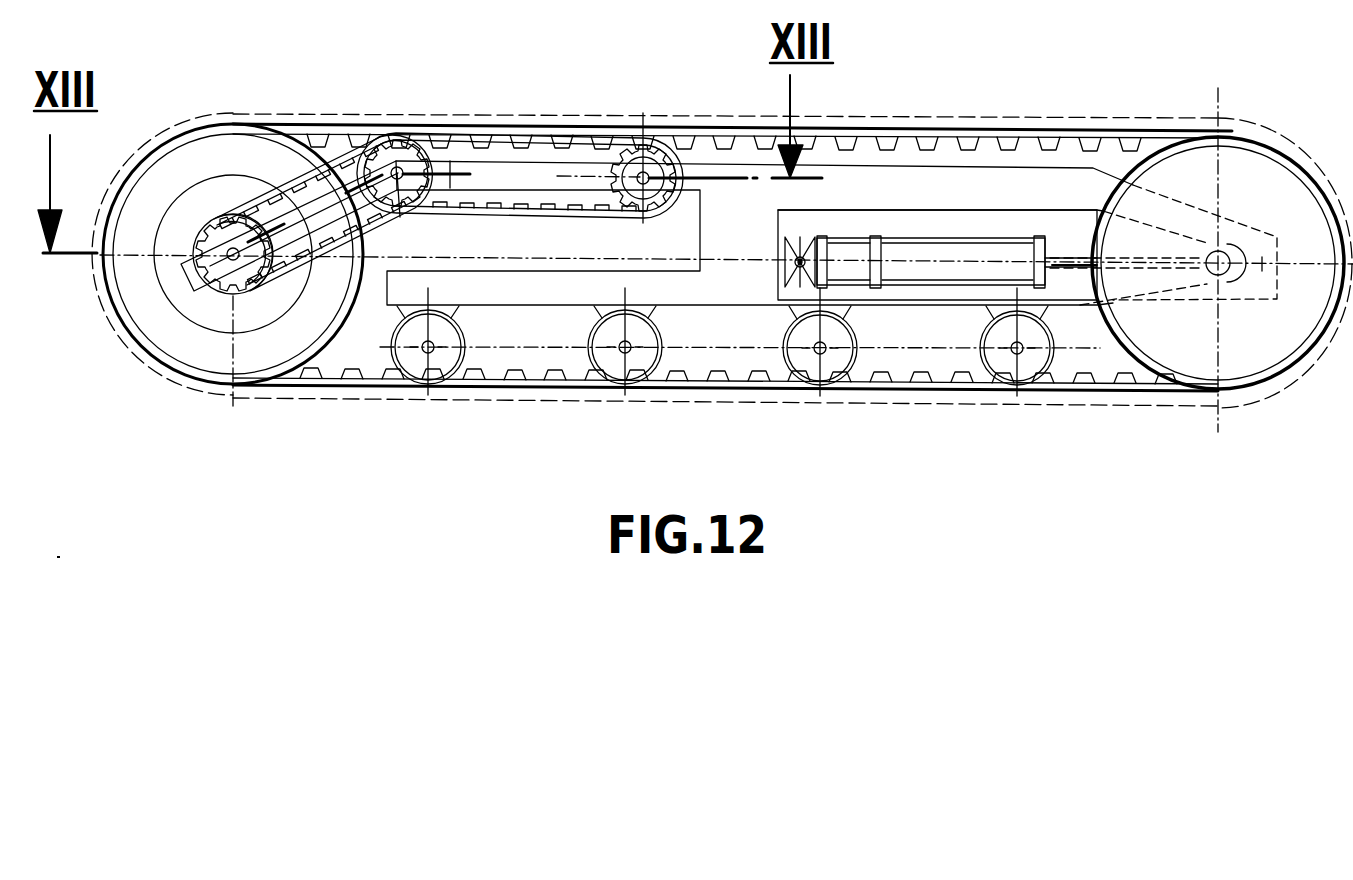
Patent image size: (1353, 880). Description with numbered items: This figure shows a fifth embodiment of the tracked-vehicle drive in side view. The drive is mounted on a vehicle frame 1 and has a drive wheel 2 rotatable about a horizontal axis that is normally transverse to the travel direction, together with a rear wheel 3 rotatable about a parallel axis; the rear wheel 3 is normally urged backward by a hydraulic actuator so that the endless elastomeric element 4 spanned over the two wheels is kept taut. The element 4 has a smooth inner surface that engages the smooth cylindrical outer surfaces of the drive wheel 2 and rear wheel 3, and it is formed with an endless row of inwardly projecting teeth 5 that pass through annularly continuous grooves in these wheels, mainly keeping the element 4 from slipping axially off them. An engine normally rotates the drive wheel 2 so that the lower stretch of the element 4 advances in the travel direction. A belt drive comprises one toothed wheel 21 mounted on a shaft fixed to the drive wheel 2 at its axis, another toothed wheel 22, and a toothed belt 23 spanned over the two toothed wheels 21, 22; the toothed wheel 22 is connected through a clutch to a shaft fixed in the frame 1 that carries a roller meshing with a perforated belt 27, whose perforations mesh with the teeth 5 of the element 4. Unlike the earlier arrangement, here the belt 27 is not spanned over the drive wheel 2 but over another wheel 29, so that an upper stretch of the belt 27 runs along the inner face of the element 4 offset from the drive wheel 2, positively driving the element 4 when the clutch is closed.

The vehicle frame 1 is at (905, 188).
The drive wheel 2 is at (147, 200).
The rear wheel 3 is at (1247, 343).
The endless elastomeric element 4 is at (1018, 130).
The inwardly projecting teeth 5 is at (913, 370).
The toothed wheel 21 is at (213, 297).
The toothed wheel 22 is at (373, 147).
The toothed belt 23 is at (287, 283).
The perforated belt 27 is at (517, 220).
The wheel 29 is at (650, 150).